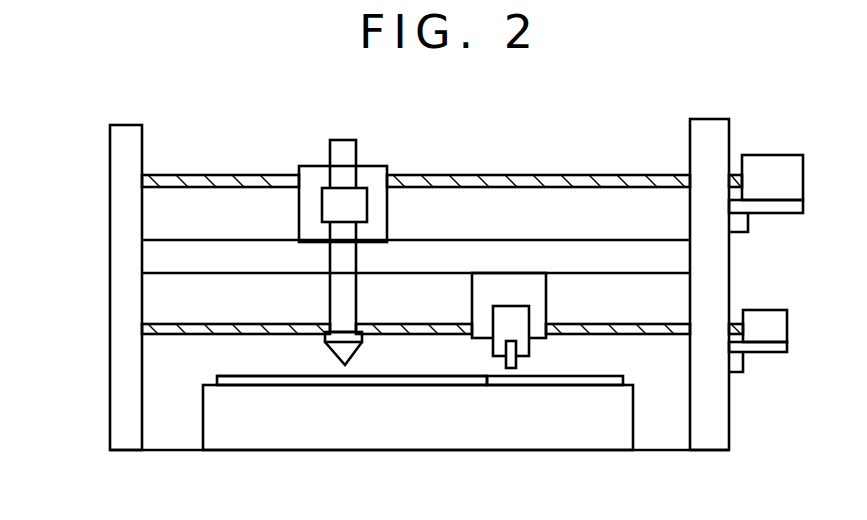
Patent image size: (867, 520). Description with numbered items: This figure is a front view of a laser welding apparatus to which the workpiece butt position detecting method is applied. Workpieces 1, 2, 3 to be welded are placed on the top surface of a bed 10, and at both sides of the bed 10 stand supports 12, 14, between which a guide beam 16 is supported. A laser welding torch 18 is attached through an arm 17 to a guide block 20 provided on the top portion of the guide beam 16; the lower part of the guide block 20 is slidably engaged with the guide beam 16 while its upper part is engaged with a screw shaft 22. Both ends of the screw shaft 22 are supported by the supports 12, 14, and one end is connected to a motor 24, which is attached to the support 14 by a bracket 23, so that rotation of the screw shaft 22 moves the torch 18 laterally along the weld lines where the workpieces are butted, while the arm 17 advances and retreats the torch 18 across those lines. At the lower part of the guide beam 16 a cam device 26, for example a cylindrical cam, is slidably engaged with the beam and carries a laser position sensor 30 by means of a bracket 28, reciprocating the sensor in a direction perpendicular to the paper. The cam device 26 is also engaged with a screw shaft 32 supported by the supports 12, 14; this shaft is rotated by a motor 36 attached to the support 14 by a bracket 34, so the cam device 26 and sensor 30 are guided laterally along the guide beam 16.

The workpiece 1 is at (420, 378).
The workpiece 2 is at (300, 378).
The workpiece 3 is at (600, 378).
The bed 10 is at (205, 427).
The support 12 is at (142, 137).
The support 14 is at (707, 119).
The guide beam 16 is at (162, 273).
The arm 17 is at (358, 190).
The laser welding torch 18 is at (348, 140).
The guide block 20 is at (307, 165).
The screw shaft 22 is at (587, 173).
The bracket 23 is at (767, 215).
The motor 24 is at (763, 155).
The cam device 26 is at (470, 300).
The bracket 28 is at (493, 345).
The laser position sensor 30 is at (508, 370).
The screw shaft 32 is at (650, 330).
The bracket 34 is at (763, 353).
The motor 36 is at (753, 310).